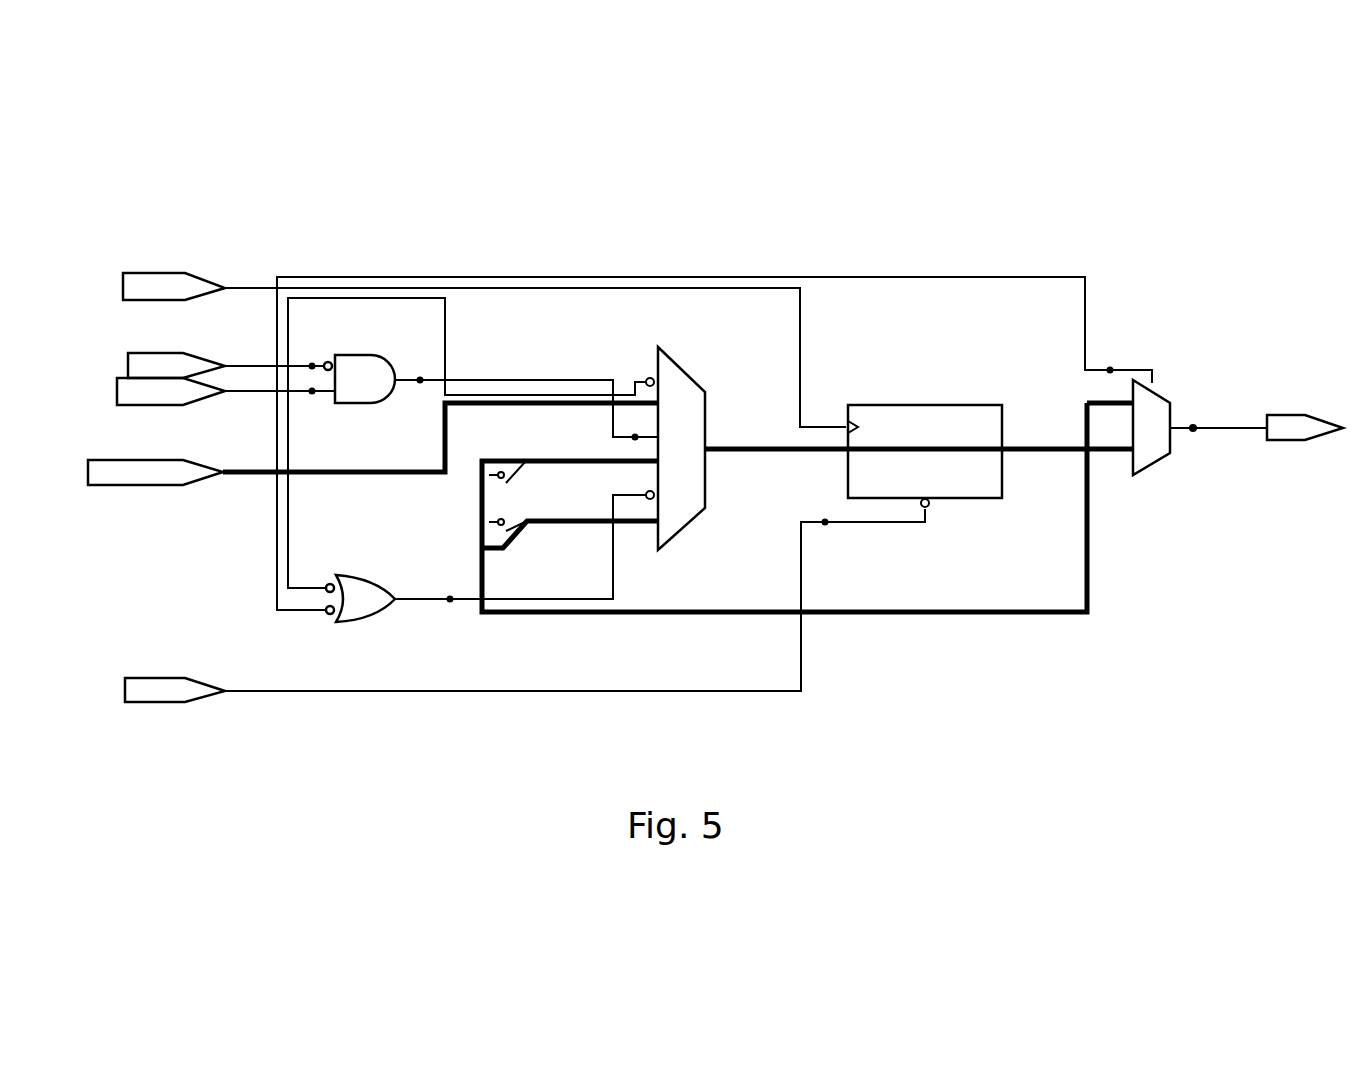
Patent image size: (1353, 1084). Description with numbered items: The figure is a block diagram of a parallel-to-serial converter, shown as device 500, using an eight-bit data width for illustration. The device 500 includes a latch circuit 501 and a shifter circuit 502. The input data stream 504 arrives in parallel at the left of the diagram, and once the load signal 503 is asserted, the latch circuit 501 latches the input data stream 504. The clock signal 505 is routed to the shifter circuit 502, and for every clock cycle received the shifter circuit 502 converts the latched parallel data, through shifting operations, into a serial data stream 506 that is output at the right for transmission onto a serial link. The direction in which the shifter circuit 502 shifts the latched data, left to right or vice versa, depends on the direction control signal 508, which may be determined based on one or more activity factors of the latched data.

The device 500 is at (978, 179).
The latch circuit 501 is at (700, 371).
The shifter circuit 502 is at (921, 398).
The load signal 503 is at (108, 393).
The input data stream 504 is at (143, 458).
The clock signal 505 is at (186, 263).
The serial data stream 506 is at (1285, 411).
The direction control signal 508 is at (196, 362).